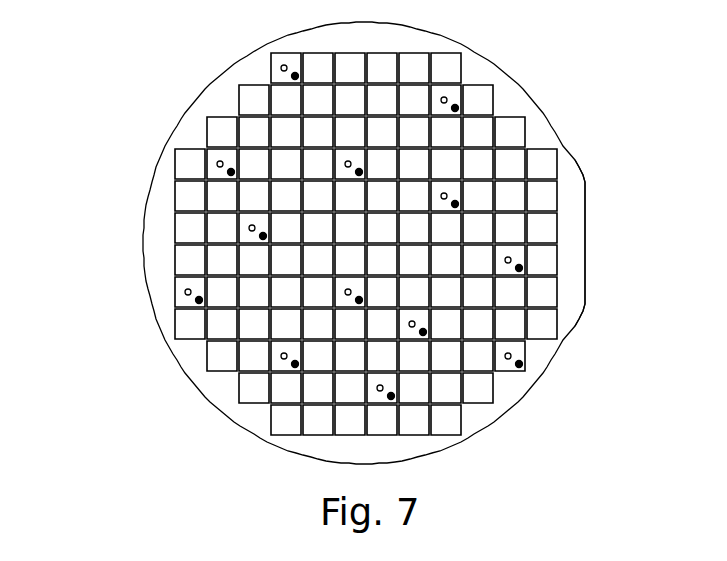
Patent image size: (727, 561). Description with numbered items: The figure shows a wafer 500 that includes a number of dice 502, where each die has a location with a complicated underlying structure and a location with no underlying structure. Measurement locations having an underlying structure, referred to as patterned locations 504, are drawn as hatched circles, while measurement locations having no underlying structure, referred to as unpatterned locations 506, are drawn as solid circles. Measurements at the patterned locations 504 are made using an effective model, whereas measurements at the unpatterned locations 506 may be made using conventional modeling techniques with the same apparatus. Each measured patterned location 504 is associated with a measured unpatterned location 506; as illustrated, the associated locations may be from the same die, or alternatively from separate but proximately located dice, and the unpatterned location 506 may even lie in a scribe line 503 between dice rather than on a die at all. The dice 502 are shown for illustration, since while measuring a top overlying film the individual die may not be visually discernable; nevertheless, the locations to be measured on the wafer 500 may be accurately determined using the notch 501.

The wafer 500 is at (142, 237).
The notch 501 is at (586, 240).
The dice 502 is at (526, 130).
The scribe line 503 is at (208, 148).
The patterned locations 504 is at (281, 67).
The unpatterned locations 506 is at (292, 77).